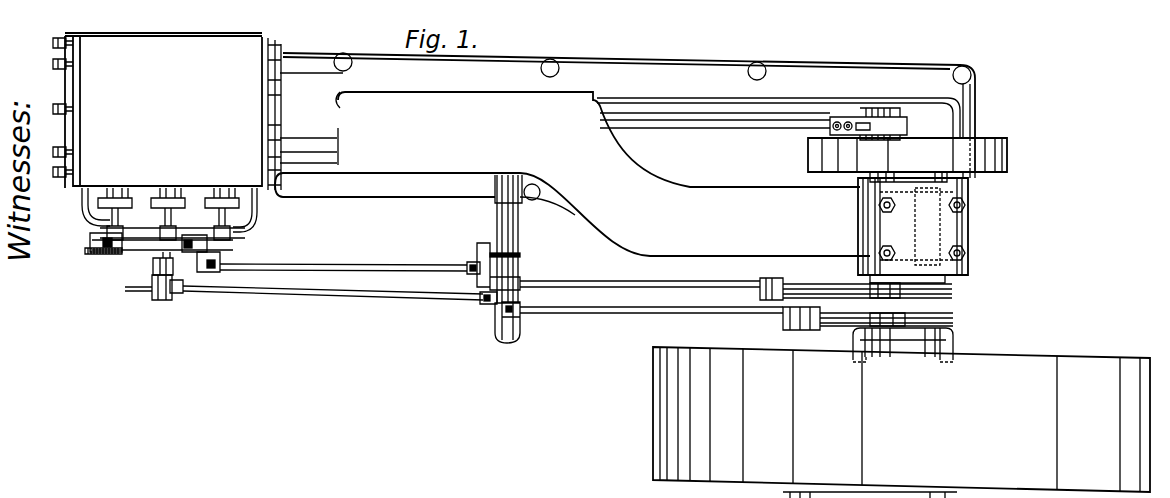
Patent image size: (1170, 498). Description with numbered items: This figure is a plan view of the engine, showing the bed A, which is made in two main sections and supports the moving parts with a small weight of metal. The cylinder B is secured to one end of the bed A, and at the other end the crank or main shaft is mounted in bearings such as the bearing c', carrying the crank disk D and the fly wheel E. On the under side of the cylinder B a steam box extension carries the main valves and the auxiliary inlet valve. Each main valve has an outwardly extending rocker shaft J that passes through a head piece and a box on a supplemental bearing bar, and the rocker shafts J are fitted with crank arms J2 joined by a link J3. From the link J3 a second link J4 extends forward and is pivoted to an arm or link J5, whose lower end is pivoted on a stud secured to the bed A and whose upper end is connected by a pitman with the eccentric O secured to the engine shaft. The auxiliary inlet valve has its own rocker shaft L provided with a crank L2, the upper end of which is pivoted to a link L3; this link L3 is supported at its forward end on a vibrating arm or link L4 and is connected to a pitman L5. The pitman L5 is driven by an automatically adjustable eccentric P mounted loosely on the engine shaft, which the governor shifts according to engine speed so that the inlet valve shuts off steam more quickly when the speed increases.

The bed A is at (625, 275).
The cylinder B is at (167, 95).
The crank disk D is at (1008, 155).
The fly wheel E is at (1080, 363).
The eccentric O is at (952, 292).
The automatically adjustable eccentric P is at (955, 321).
The bearing c' is at (935, 226).
The rocker shaft J is at (107, 212).
The crank arm J2 is at (232, 240).
The link J3 is at (92, 240).
The second link J4 is at (358, 261).
The arm or link J5 is at (476, 250).
The rocker shaft L is at (170, 255).
The crank L2 is at (157, 267).
The link L3 is at (380, 293).
The vibrating arm or link L4 is at (513, 322).
The pitman L5 is at (667, 317).